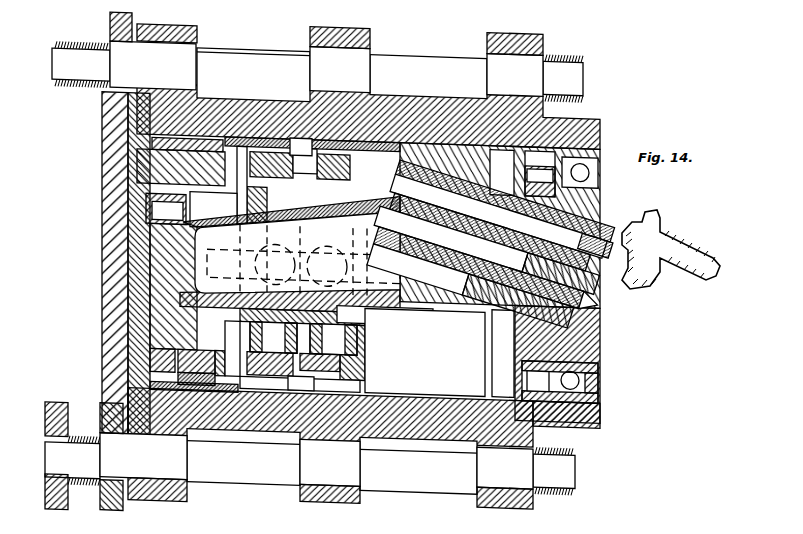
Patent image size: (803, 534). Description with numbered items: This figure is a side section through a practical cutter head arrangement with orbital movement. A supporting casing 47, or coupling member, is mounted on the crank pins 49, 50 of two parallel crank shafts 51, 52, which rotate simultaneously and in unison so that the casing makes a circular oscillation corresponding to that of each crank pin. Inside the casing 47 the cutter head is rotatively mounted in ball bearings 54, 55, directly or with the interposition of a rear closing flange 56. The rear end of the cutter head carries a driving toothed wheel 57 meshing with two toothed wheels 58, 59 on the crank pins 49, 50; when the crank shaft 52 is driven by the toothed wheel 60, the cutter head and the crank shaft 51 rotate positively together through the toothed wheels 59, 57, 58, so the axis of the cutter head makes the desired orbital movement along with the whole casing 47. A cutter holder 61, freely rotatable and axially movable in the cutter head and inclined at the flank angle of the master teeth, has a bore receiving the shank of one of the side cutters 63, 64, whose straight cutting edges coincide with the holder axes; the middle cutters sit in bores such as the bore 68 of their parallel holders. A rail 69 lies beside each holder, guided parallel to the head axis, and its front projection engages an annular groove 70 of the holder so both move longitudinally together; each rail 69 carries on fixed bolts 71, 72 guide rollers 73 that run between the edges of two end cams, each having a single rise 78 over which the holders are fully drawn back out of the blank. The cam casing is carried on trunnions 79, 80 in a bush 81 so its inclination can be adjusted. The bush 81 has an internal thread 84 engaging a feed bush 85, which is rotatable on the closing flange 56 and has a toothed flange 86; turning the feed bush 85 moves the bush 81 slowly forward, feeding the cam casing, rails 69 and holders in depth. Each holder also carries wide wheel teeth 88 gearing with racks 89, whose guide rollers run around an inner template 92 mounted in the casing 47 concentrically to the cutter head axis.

The supporting casing 47 is at (364, 268).
The crank pin 49 is at (326, 60).
The crank pin 50 is at (316, 473).
The crank shaft 51 is at (317, 74).
The crank shaft 52 is at (310, 463).
The ball bearing 54 is at (580, 172).
The ball bearing 55 is at (166, 208).
The rear closing flange 56 is at (181, 167).
The driving toothed wheel 57 is at (115, 265).
The toothed wheel 58 is at (121, 27).
The toothed wheel 59 is at (111, 457).
The toothed wheel 60 is at (56, 456).
The cutter holder 61 is at (596, 236).
The side cutter 63 is at (500, 217).
The side cutter 64 is at (483, 281).
The bore for middle cutter 68 is at (486, 250).
The rail 69 is at (308, 257).
The annular groove 70 is at (425, 353).
The fixed bolt 71 is at (273, 338).
The fixed bolt 72 is at (333, 340).
The guide roller 73 is at (320, 362).
The rise 78 is at (303, 260).
The trunnion 79 is at (312, 147).
The trunnion 80 is at (300, 383).
The bush 81 is at (200, 382).
The internal thread 84 is at (196, 380).
The feed bush 85 is at (196, 361).
The toothed flange 86 is at (162, 360).
The wheel teeth 88 is at (502, 274).
The rack 89 is at (540, 174).
The inner template 92 is at (560, 382).